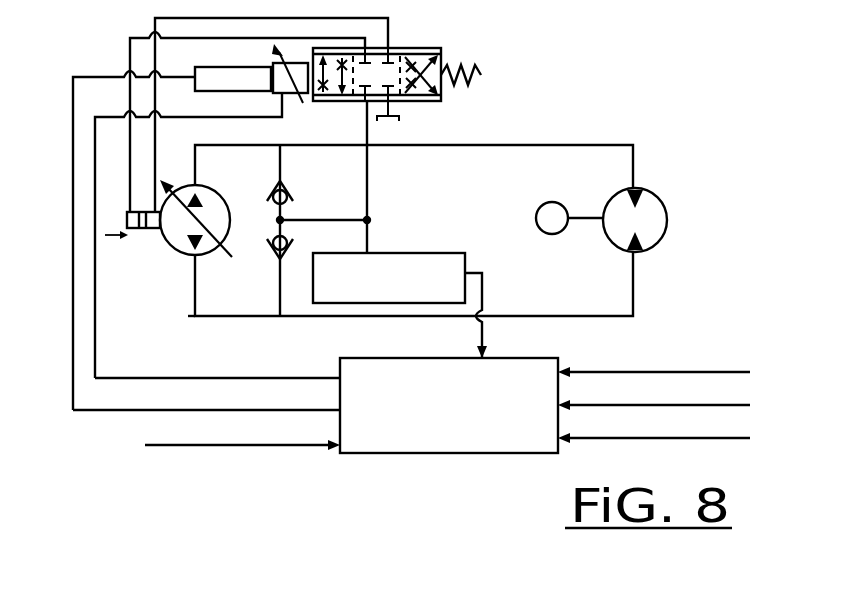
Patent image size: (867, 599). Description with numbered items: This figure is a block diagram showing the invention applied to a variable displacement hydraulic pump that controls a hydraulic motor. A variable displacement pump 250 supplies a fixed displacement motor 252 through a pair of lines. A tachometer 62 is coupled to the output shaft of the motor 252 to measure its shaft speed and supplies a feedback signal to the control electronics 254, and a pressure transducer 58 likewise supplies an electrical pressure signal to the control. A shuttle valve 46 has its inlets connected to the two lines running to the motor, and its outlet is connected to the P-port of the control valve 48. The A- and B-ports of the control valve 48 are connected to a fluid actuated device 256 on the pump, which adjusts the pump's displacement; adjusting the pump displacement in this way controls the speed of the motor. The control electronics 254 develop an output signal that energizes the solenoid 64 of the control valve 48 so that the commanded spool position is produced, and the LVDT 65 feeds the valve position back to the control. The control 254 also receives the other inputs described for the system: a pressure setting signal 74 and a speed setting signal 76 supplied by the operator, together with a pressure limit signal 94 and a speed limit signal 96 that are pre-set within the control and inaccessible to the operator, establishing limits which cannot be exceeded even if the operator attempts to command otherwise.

The LVDT 65 is at (237, 65).
The solenoid 64 is at (290, 93).
The control valve 48 is at (445, 50).
The variable displacement pump 250 is at (210, 256).
The fluid actuated device 256 is at (145, 228).
The shuttle valve 46 is at (288, 209).
The pressure transducer 58 is at (438, 252).
The tachometer 62 is at (545, 191).
The fixed displacement motor 252 is at (668, 213).
The control electronics 254 is at (395, 453).
The pressure setting signal 74 is at (242, 437).
The pressure limit signal 94 is at (654, 363).
The speed setting signal 76 is at (654, 396).
The speed limit signal 96 is at (654, 428).